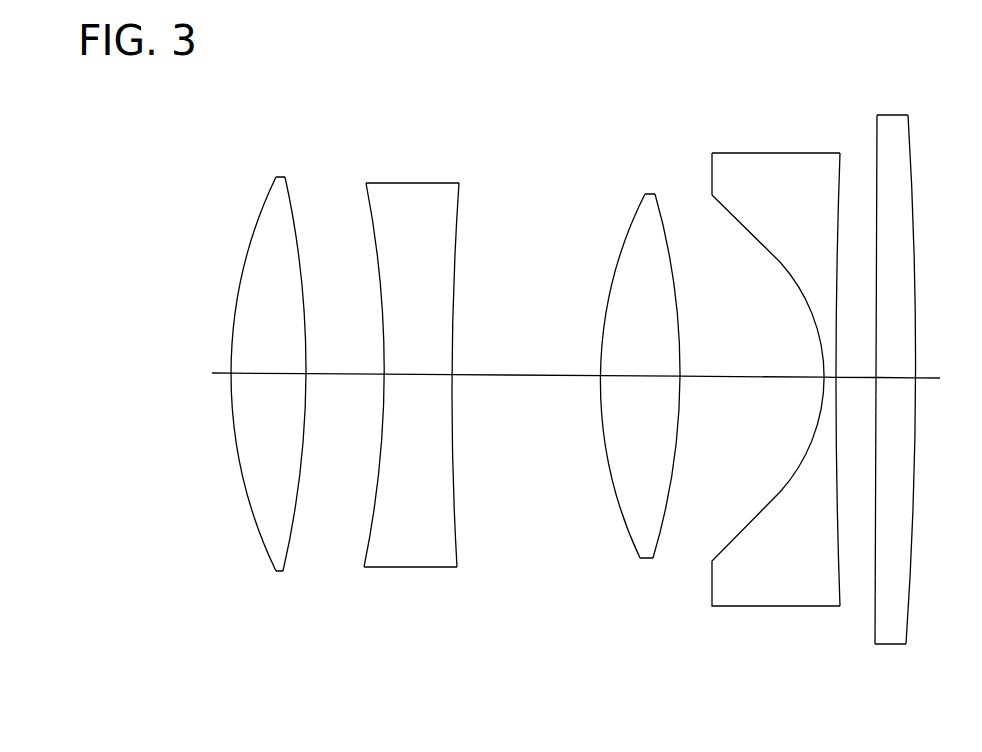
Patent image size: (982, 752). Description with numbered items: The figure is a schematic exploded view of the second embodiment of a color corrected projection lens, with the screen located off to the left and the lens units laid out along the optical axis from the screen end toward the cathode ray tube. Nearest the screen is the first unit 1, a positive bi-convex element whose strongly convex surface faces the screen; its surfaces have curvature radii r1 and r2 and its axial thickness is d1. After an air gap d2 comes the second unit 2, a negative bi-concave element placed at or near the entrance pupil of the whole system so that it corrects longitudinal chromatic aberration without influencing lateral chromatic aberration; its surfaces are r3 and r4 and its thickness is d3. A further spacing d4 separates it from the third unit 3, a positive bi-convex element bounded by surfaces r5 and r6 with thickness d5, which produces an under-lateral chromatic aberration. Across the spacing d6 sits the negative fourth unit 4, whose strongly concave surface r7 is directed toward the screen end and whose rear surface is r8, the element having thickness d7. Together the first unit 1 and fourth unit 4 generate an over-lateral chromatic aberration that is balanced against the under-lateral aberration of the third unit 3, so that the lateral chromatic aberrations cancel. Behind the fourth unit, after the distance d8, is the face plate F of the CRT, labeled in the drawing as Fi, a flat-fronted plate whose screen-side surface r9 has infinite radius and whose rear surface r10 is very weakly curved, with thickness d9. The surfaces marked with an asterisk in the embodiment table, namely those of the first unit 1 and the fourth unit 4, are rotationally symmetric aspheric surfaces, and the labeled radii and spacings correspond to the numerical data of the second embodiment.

The first unit 1 is at (272, 394).
The second unit 2 is at (419, 393).
The third unit 3 is at (641, 399).
The fourth unit 4 is at (791, 402).
The filter plate Fi is at (902, 401).
The face plate F is at (902, 401).
The curvature radius of first surface r1 is at (233, 318).
The curvature radius of second surface r2 is at (308, 320).
The curvature radius of third surface r3 is at (382, 313).
The curvature radius of fourth surface r4 is at (453, 318).
The curvature radius of fifth surface r5 is at (608, 320).
The curvature radius of sixth surface r6 is at (680, 322).
The curvature radius of seventh surface r7 is at (812, 320).
The curvature radius of eighth surface r8 is at (837, 317).
The curvature radius of ninth surface r9 is at (875, 322).
The curvature radius of tenth surface r10 is at (917, 322).
The thickness of first unit d1 is at (275, 373).
The distance between first and second units d2 is at (348, 373).
The thickness of second unit d3 is at (422, 374).
The distance between second and third units d4 is at (530, 375).
The thickness of third unit d5 is at (645, 376).
The distance between third and fourth units d6 is at (753, 377).
The thickness of fourth unit d7 is at (822, 377).
The distance between fourth unit and face plate d8 is at (852, 377).
The thickness of face plate d9 is at (900, 377).